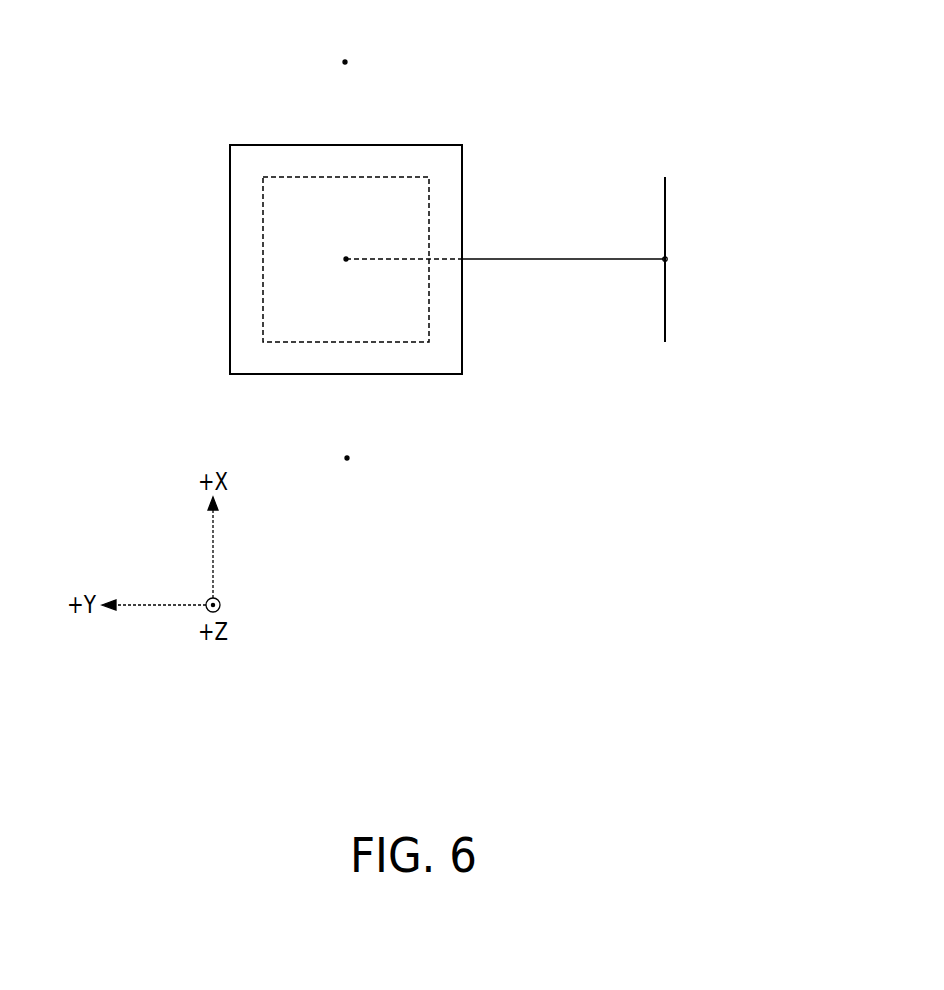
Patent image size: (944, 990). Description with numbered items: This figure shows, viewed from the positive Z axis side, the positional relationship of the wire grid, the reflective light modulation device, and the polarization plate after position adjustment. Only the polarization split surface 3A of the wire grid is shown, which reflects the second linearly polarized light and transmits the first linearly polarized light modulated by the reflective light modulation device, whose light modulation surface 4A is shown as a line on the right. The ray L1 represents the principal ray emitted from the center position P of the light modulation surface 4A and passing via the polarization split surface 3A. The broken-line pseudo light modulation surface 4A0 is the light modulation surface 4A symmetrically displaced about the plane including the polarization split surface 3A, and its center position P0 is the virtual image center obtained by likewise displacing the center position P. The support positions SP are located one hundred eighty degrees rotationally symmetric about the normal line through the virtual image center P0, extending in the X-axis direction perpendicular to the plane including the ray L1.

The polarization split surface 3A is at (463, 334).
The pseudo light modulation surface 4A0 is at (381, 177).
The center position of the pseudo light modulation surface P0 is at (346, 259).
The ray L1 is at (566, 259).
The light modulation surface 4A is at (666, 192).
The center position of the light modulation surface P is at (667, 259).
The support position SP is at (347, 61).